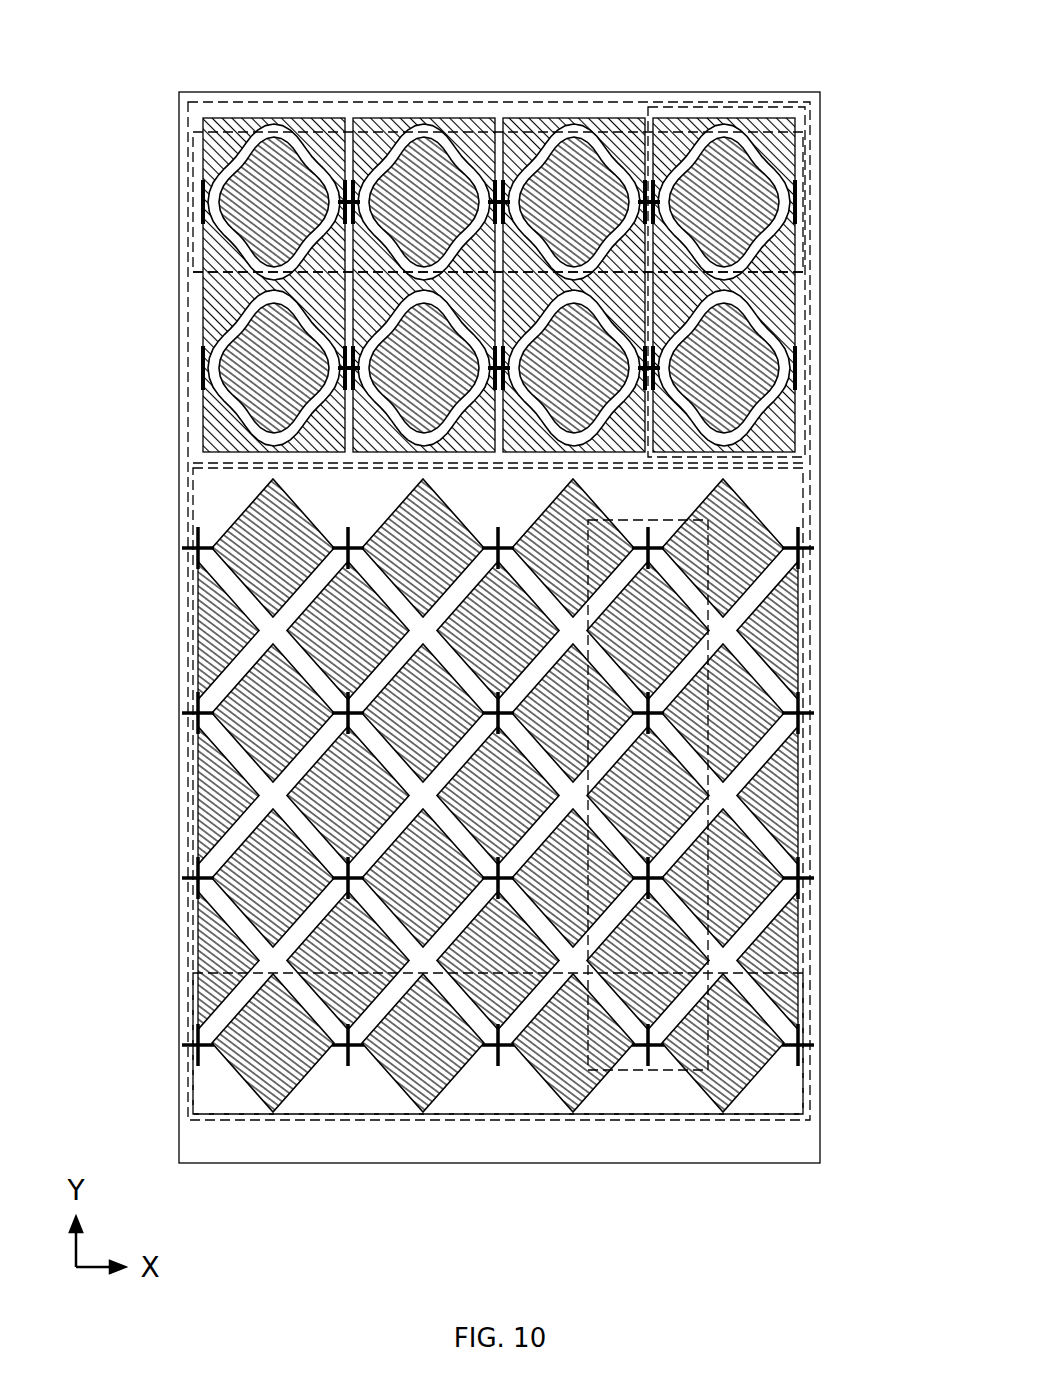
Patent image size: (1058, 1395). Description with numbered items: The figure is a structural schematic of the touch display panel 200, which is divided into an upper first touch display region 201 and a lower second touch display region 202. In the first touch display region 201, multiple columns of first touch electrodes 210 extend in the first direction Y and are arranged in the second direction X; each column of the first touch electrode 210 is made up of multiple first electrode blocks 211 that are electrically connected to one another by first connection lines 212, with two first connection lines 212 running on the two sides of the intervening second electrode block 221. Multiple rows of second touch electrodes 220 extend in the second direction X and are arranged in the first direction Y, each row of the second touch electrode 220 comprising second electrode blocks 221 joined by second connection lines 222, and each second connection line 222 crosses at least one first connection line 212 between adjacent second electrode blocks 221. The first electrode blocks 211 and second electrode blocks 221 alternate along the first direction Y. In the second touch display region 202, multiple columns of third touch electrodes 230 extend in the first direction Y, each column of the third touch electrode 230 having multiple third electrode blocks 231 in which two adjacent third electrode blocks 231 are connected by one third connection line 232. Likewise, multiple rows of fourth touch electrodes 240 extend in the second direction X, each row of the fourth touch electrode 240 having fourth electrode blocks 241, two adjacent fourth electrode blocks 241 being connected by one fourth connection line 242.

The touch display panel 200 is at (474, 1268).
The first touch display region 201 is at (188, 290).
The second touch display region 202 is at (190, 803).
The first touch electrode 210 is at (725, 113).
The first electrode block 211 is at (806, 272).
The first connection line 212 is at (800, 362).
The second touch electrode 220 is at (199, 206).
The second electrode block 221 is at (268, 135).
The second connection line 222 is at (344, 190).
The third touch electrode 230 is at (650, 1075).
The third electrode block 231 is at (803, 790).
The third connection line 232 is at (803, 870).
The fourth touch electrode 240 is at (803, 1070).
The fourth electrode block 241 is at (276, 1115).
The fourth connection line 242 is at (205, 1050).